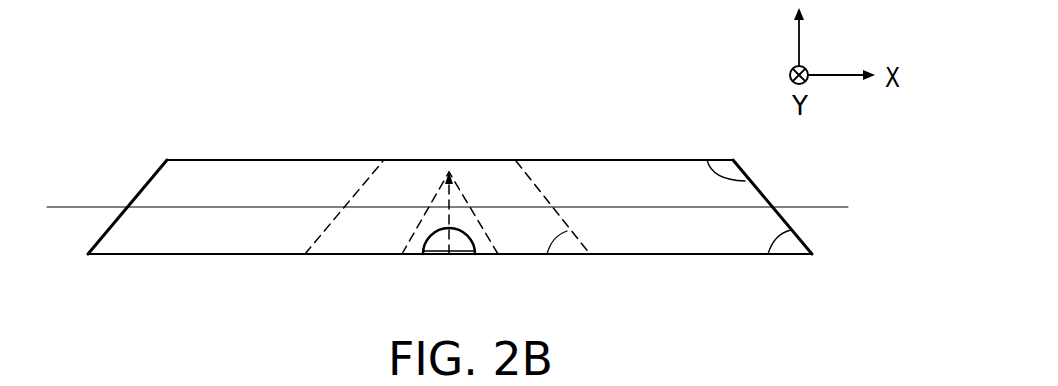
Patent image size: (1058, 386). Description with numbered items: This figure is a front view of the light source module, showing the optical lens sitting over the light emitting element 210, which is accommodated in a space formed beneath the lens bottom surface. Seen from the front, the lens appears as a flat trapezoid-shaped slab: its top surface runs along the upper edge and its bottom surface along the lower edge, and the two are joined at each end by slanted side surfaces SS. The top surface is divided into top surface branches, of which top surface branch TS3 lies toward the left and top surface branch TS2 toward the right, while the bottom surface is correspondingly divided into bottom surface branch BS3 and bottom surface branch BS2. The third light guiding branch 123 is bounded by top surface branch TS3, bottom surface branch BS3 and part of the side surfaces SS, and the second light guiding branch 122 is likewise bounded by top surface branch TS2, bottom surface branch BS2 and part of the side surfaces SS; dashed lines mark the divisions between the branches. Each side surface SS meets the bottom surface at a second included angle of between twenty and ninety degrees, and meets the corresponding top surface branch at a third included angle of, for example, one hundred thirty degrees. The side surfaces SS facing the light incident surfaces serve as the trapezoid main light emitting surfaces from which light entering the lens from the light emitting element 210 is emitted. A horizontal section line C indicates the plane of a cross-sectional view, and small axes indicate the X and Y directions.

The second light guiding branch 122 is at (664, 218).
The third light guiding branch 123 is at (235, 196).
The light emitting element 210 is at (461, 252).
The top surface branch TS2 is at (642, 152).
The top surface branch TS3 is at (326, 152).
The bottom surface branch BS2 is at (691, 262).
The bottom surface branch BS3 is at (228, 262).
The side surface SS is at (585, 230).
The section line C- C is at (70, 200).